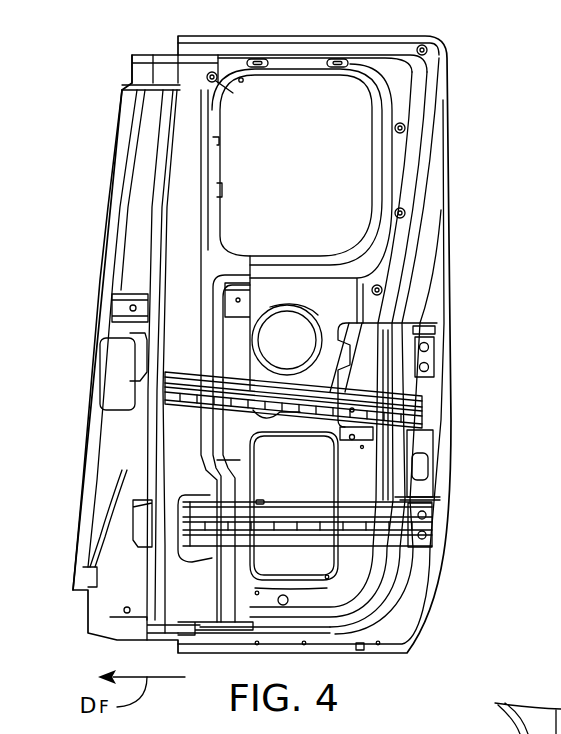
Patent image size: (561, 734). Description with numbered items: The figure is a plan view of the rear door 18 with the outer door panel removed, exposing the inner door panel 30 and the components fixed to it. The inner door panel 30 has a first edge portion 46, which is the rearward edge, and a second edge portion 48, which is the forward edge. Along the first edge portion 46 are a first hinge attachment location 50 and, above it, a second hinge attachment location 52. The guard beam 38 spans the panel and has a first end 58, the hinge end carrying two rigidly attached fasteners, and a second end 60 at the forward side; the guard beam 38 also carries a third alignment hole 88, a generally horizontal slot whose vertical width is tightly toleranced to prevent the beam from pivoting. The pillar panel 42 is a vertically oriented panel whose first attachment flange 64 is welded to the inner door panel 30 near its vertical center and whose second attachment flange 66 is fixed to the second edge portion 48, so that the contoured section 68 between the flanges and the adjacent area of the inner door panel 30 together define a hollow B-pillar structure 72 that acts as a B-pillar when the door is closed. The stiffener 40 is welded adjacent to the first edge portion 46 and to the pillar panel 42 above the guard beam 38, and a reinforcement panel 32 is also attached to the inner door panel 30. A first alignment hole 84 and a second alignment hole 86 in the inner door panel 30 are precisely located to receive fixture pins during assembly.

The rear door 18 is at (468, 167).
The inner door panel 30 is at (296, 44).
The reinforcement panel 32 is at (426, 392).
The guard beam 38 is at (316, 510).
The stiffener 40 is at (176, 378).
The pillar panel 42 is at (178, 287).
The first edge portion 46 is at (449, 265).
The second edge portion 48 is at (93, 360).
The first hinge attachment location 50 is at (433, 518).
The second hinge attachment location 52 is at (440, 356).
The first end 58 is at (433, 524).
The second end 60 is at (201, 527).
The first attachment flange 64 is at (211, 262).
The second attachment flange 66 is at (127, 214).
The contoured section 68 is at (183, 190).
The hollow B-pillar structure 72 is at (192, 100).
The first alignment hole 84 is at (244, 82).
The second alignment hole 86 is at (362, 652).
The third alignment hole 88 is at (260, 500).